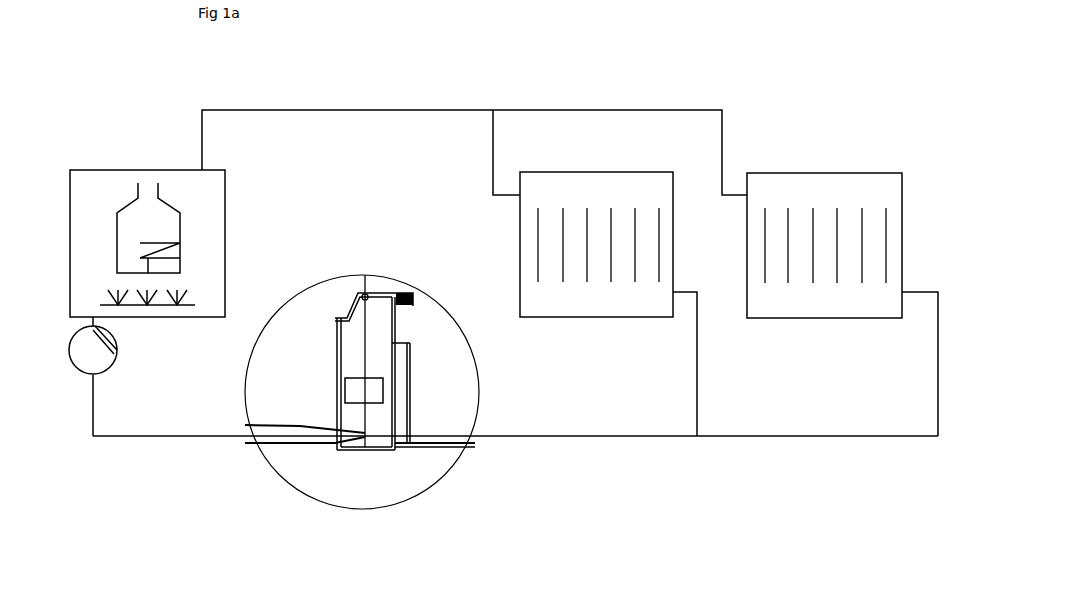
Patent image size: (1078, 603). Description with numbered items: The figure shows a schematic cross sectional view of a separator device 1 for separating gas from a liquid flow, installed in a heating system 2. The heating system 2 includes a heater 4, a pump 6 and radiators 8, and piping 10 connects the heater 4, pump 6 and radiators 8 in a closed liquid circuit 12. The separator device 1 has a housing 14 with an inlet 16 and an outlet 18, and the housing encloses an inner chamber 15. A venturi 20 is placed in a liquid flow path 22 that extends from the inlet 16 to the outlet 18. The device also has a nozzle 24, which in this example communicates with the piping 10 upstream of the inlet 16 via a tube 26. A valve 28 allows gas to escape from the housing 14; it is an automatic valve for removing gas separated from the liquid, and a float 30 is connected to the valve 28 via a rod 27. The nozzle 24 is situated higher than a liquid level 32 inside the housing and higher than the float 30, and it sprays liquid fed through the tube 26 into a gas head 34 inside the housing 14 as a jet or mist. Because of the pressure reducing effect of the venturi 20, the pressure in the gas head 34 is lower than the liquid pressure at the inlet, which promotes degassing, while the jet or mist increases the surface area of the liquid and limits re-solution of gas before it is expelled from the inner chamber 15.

The separator device 1 is at (312, 513).
The heating system 2 is at (800, 119).
The heater 4 is at (112, 170).
The pump 6 is at (76, 366).
The radiators 8 is at (590, 172).
The piping 10 is at (644, 108).
The closed liquid circuit 12 is at (911, 439).
The housing 14 is at (382, 455).
The inner chamber 15 is at (351, 318).
The inlet 16 is at (372, 432).
The outlet 18 is at (362, 438).
The venturi 20 is at (364, 451).
The liquid flow path 22 is at (383, 436).
The nozzle 24 is at (388, 347).
The tube 26 is at (408, 407).
The rod 27 is at (365, 362).
The valve 28 is at (408, 306).
The float 30 is at (338, 381).
The liquid level 32 is at (345, 390).
The gas head 34 is at (338, 338).